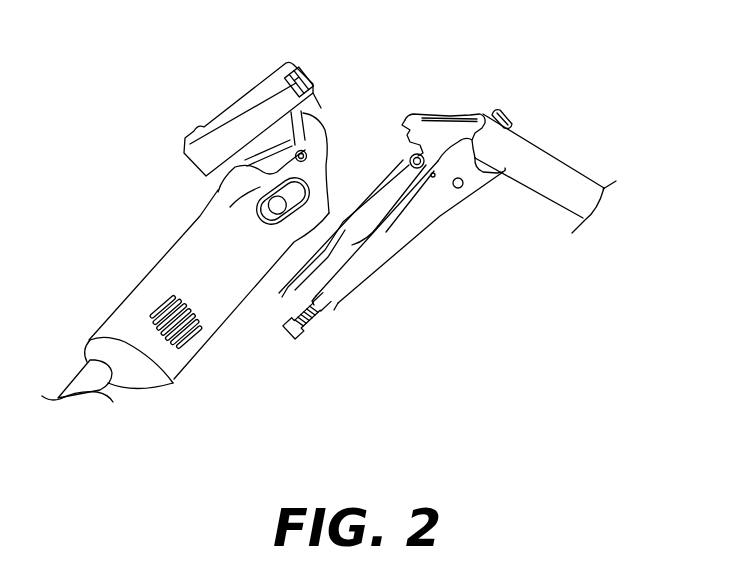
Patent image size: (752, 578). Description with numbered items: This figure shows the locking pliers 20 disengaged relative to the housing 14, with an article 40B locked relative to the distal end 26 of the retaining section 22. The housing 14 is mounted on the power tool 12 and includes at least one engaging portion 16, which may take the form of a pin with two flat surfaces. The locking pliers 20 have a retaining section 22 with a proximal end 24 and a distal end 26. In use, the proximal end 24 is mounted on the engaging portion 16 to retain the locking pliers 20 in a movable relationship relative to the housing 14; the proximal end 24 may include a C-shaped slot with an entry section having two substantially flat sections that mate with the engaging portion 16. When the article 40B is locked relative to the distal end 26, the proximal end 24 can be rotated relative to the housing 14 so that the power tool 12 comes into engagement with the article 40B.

The power tool 12 is at (147, 302).
The housing 14 is at (243, 129).
The engaging portion 16 is at (296, 72).
The locking pliers 20 is at (406, 257).
The retaining section 22 is at (445, 130).
The proximal end 24 is at (404, 120).
The distal end 26 is at (481, 110).
The article 40B is at (557, 161).